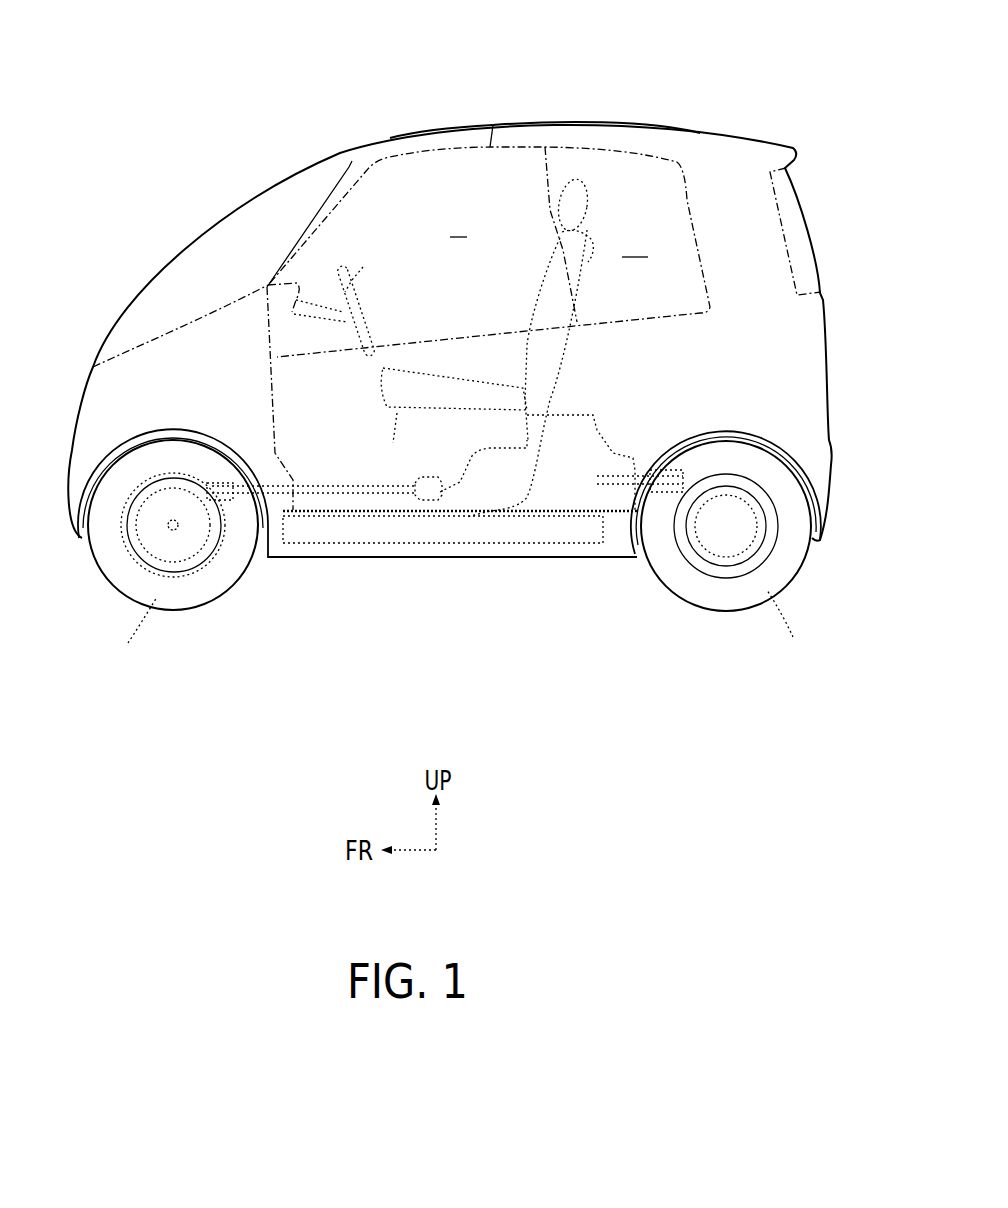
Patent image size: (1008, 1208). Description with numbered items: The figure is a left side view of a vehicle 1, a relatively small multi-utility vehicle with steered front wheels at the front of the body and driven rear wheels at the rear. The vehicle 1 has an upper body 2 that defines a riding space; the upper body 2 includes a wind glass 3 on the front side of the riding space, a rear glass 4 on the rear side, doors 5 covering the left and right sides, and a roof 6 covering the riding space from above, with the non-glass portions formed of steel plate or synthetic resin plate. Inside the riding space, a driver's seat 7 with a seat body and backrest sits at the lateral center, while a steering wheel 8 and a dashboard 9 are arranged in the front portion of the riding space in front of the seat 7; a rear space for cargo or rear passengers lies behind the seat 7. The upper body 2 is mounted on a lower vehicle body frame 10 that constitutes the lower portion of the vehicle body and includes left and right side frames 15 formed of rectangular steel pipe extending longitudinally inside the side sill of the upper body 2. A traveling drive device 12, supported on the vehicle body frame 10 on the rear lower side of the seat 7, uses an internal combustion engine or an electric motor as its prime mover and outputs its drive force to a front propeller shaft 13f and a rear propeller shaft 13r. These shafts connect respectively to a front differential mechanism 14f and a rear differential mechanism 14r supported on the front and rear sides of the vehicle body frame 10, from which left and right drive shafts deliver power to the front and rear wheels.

The vehicle 1 is at (595, 98).
The upper body 2 is at (388, 137).
The wind glass 3 is at (197, 250).
The rear glass 4 is at (793, 225).
The doors 5 is at (493, 125).
The roof 6 is at (443, 140).
The driver's seat 7 is at (452, 380).
The steering wheel 8 is at (363, 267).
The dashboard 9 is at (300, 287).
The vehicle body frame 10 is at (443, 575).
The traveling drive device 12 is at (558, 532).
The front propeller shaft 13f is at (338, 490).
The rear propeller shaft 13r is at (648, 478).
The front differential mechanism 14f is at (212, 490).
The rear differential mechanism 14r is at (680, 470).
The side frames 15 is at (413, 530).